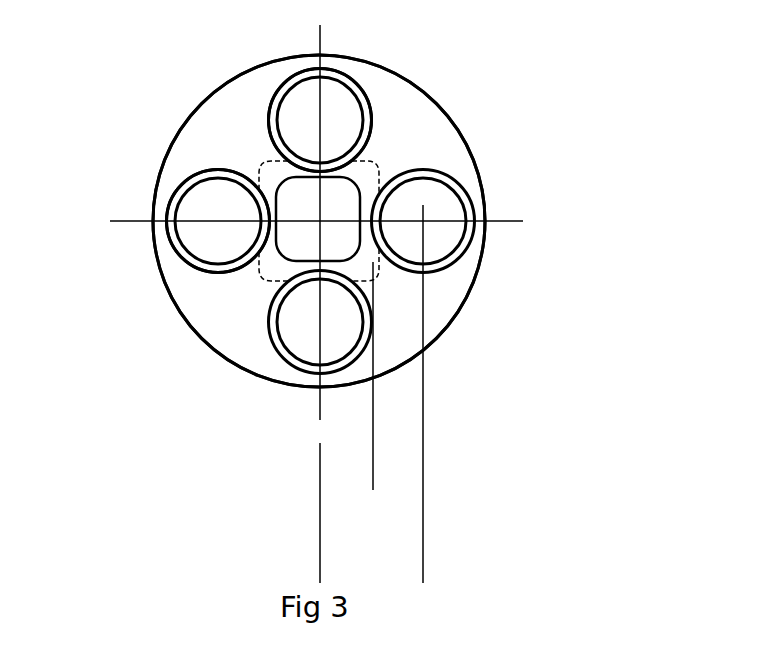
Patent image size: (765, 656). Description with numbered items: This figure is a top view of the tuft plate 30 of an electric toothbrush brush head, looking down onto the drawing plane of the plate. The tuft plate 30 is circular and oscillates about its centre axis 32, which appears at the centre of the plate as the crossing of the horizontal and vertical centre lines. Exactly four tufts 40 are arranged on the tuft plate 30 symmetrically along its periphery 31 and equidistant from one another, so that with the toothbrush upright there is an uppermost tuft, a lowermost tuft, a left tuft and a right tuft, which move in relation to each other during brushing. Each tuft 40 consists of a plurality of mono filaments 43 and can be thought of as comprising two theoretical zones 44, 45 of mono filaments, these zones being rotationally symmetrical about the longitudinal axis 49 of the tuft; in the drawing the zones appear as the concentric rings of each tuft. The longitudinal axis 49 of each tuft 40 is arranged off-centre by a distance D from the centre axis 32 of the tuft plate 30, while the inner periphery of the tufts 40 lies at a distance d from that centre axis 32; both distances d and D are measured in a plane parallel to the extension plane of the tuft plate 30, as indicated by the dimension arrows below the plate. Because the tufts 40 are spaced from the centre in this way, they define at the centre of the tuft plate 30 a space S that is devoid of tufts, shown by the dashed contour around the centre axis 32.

The tuft plate 30 is at (407, 140).
The periphery of the tuft plate 31 is at (456, 141).
The centre axis of the tuft plate 32 is at (330, 209).
The tuft 40 is at (212, 202).
The mono filaments 43 is at (319, 221).
The first zone of mono filaments 44 is at (338, 113).
The second zone of mono filaments 45 is at (270, 113).
The longitudinal axis of the tuft 49 is at (428, 206).
The space devoid of tufts S is at (300, 230).
The distance of the tuft inner periphery from the centre axis d is at (412, 482).
The off-centre distance of the tuft axis D is at (423, 563).